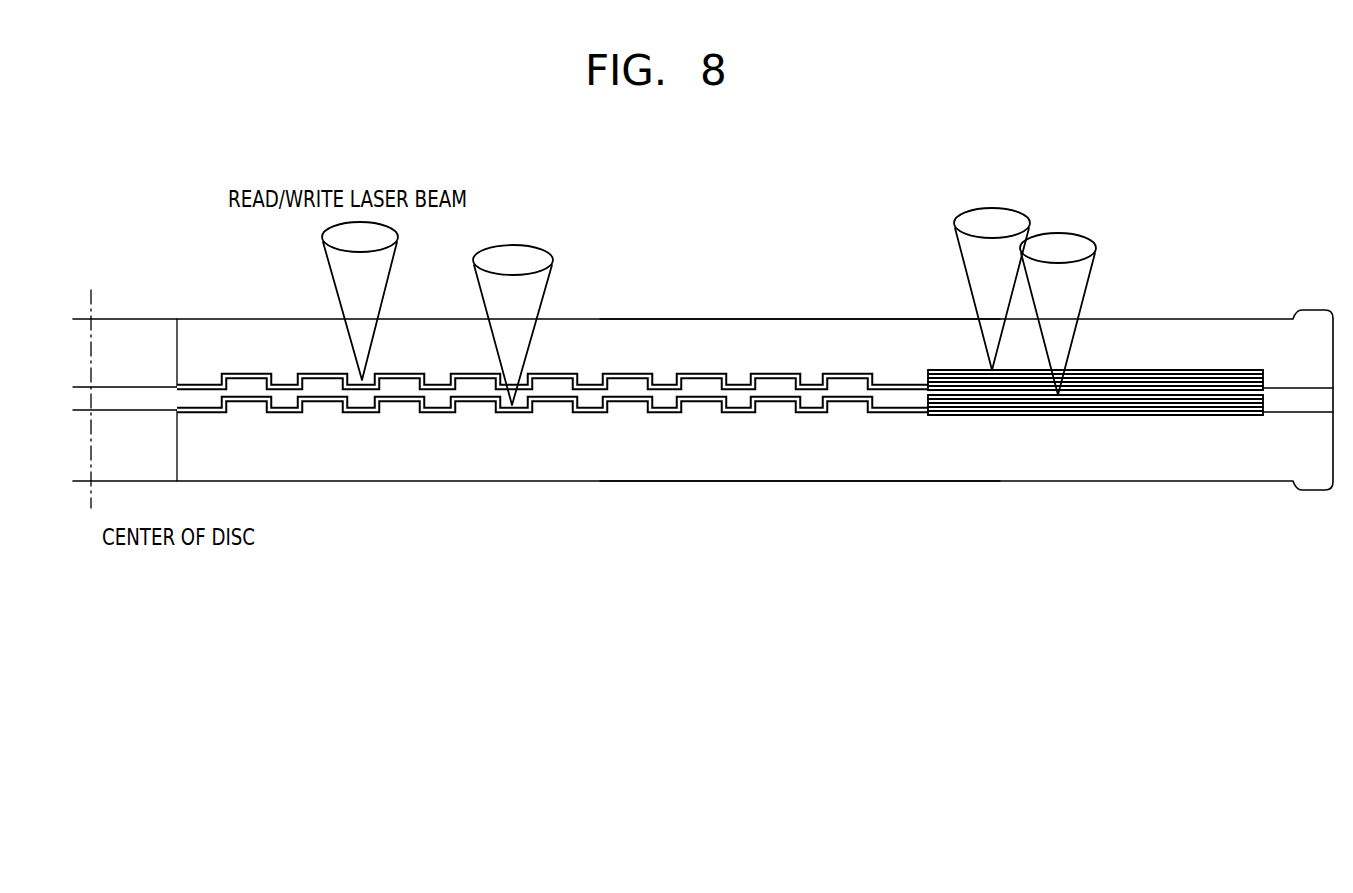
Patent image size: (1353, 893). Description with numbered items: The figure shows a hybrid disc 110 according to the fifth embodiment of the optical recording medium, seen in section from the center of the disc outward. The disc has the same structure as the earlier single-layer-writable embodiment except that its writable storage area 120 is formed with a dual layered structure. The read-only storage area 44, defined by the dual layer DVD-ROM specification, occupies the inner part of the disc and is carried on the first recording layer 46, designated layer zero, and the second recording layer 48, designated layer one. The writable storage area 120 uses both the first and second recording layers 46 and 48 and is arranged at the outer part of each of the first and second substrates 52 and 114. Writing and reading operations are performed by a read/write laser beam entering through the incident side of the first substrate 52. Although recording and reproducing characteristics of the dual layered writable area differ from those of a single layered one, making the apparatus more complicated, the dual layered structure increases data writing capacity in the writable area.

The read-only storage area 44 is at (552, 400).
The first recording layer 46 is at (645, 372).
The second recording layer 48 is at (225, 420).
The first substrate 52 is at (812, 342).
The hybrid disc 110 is at (1279, 539).
The second substrate 114 is at (857, 460).
The writable storage area 120 is at (1263, 416).